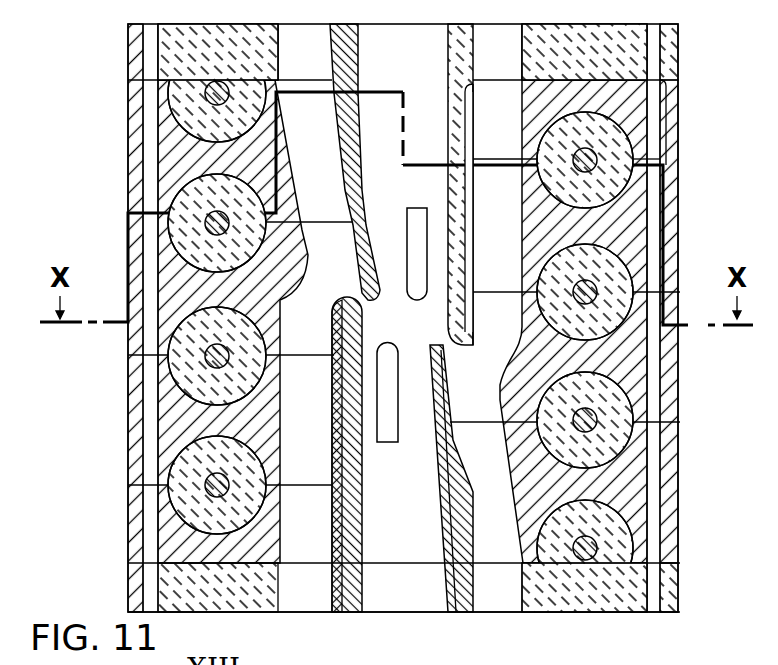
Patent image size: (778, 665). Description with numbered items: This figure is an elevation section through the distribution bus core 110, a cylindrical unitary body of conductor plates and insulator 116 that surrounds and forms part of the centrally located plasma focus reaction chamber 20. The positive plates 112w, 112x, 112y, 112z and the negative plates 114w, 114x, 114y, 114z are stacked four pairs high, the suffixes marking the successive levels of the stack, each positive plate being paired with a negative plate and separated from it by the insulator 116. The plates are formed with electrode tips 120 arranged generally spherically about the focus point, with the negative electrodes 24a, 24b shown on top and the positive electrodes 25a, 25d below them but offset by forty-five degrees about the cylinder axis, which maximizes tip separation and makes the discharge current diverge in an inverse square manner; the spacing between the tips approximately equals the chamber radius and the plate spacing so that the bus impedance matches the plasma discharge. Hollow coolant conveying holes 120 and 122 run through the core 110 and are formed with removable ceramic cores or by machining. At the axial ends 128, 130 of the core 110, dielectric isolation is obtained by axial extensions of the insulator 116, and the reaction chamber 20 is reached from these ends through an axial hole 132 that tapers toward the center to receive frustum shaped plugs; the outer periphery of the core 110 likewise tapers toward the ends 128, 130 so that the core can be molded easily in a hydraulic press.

The cylindrical core 110 is at (112, 389).
The positive plate (first stack level) 112w is at (692, 106).
The positive plate (second stack level) 112x is at (697, 205).
The positive plate (third stack level) 112y is at (697, 382).
The positive plate (fourth stack level) 112z is at (699, 490).
The negative plate (first stack level) 114w is at (610, 148).
The negative plate (second stack level) 114x is at (608, 280).
The negative plate (third stack level) 114y is at (608, 409).
The negative plate (fourth stack level) 114z is at (607, 536).
The insulator 116 is at (627, 52).
The electrode tips / coolant conveying holes 120 is at (652, 604).
The coolant conveying hole / insulator slab 122 is at (505, 604).
The axial end of the core 128 is at (448, 36).
The axial end of the core 130 is at (438, 606).
The axial hole 132 is at (397, 622).
The plasma focus reaction chamber 20 is at (415, 440).
The negative electrode (sector a) 24a is at (410, 366).
The negative electrode (sector b) 24b is at (430, 398).
The positive electrode (sector a) 25a is at (405, 292).
The positive electrode (sector d) 25d is at (388, 256).